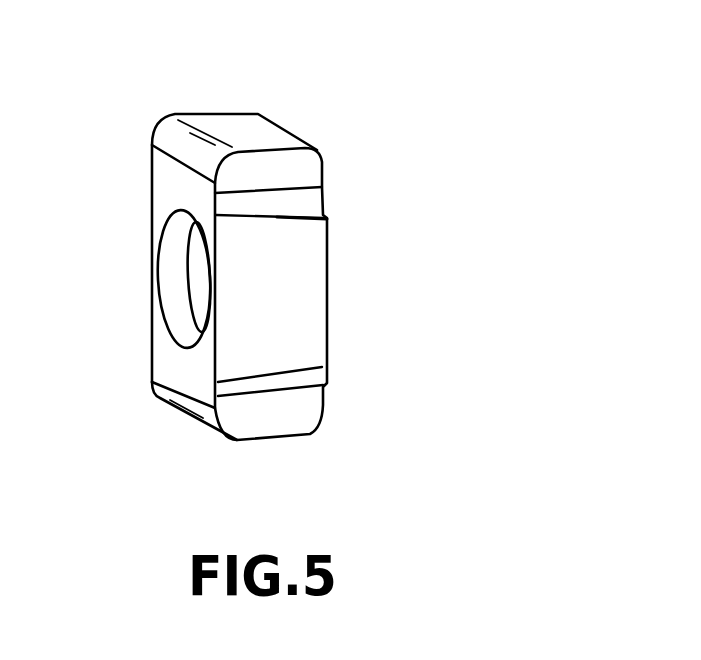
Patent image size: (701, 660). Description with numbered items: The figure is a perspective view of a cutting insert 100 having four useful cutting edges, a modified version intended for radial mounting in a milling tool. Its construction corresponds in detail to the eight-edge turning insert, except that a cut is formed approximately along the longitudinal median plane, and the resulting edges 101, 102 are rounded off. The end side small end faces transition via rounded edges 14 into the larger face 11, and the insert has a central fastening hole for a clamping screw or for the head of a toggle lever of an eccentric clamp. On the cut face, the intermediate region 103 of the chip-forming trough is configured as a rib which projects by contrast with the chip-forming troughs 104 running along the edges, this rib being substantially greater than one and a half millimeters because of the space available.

The cutting insert 100 is at (340, 247).
The larger face 11 is at (162, 352).
The rounded edge 14 is at (172, 131).
The edge 101 is at (318, 148).
The edge 102 is at (318, 433).
The intermediate region 103 is at (303, 295).
The chip-forming trough 104 is at (262, 168).